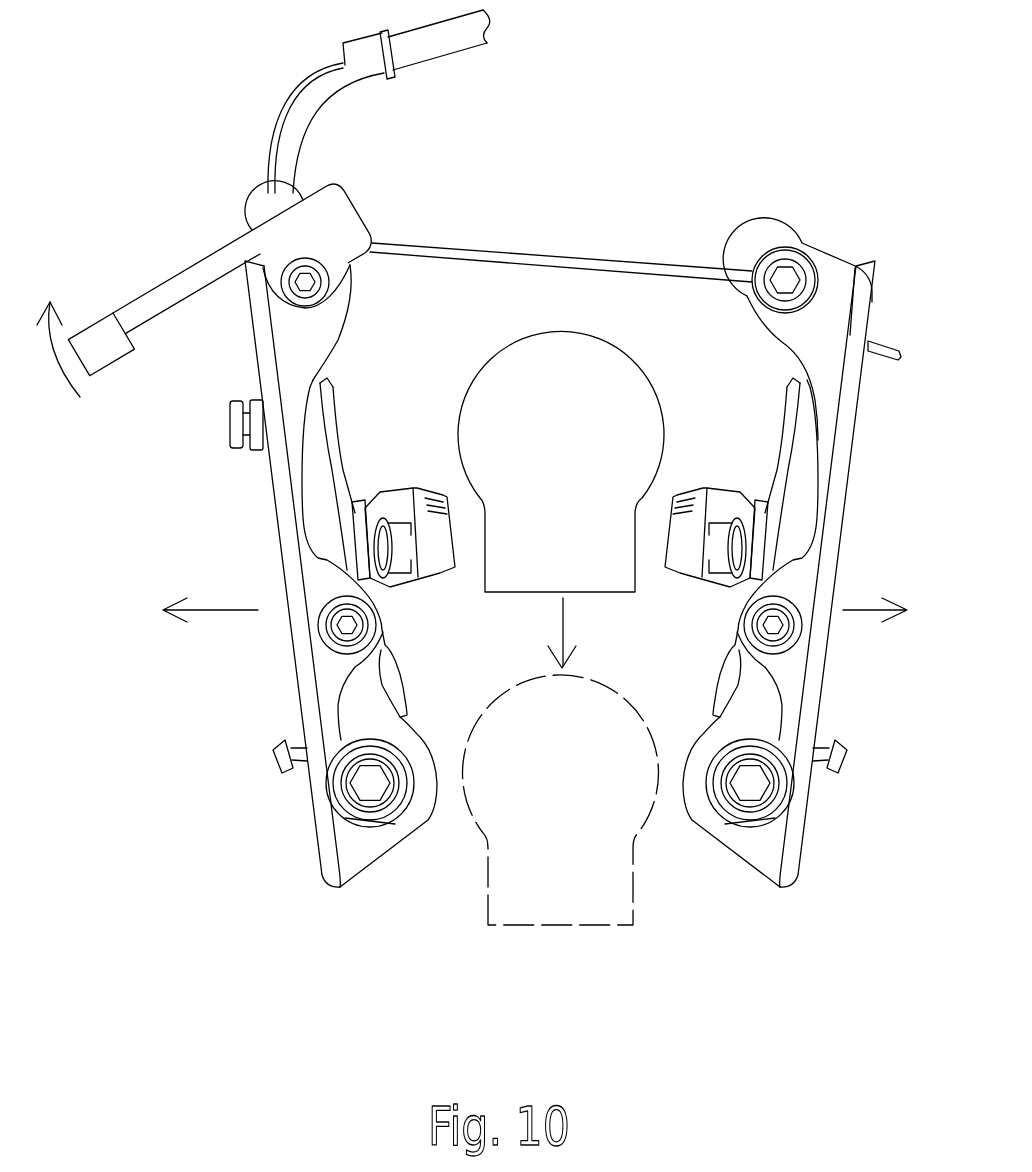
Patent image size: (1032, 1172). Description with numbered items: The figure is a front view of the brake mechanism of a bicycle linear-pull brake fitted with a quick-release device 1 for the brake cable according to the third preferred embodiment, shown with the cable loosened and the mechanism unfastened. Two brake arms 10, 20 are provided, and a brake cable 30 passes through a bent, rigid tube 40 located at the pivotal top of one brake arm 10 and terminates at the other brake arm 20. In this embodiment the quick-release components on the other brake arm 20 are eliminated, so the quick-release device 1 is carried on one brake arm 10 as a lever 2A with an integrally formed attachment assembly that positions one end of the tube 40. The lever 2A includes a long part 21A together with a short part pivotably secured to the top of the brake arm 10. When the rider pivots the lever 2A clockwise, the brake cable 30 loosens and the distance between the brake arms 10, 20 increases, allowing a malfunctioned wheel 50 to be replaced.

The quick-release device 1 is at (670, 166).
The brake arm 10 is at (314, 679).
The brake arm 20 is at (806, 688).
The brake cable 30 is at (537, 253).
The bent, rigid tube 40 is at (305, 90).
The wheel 50 is at (458, 420).
The lever 2A is at (147, 289).
The long part 21A is at (207, 260).